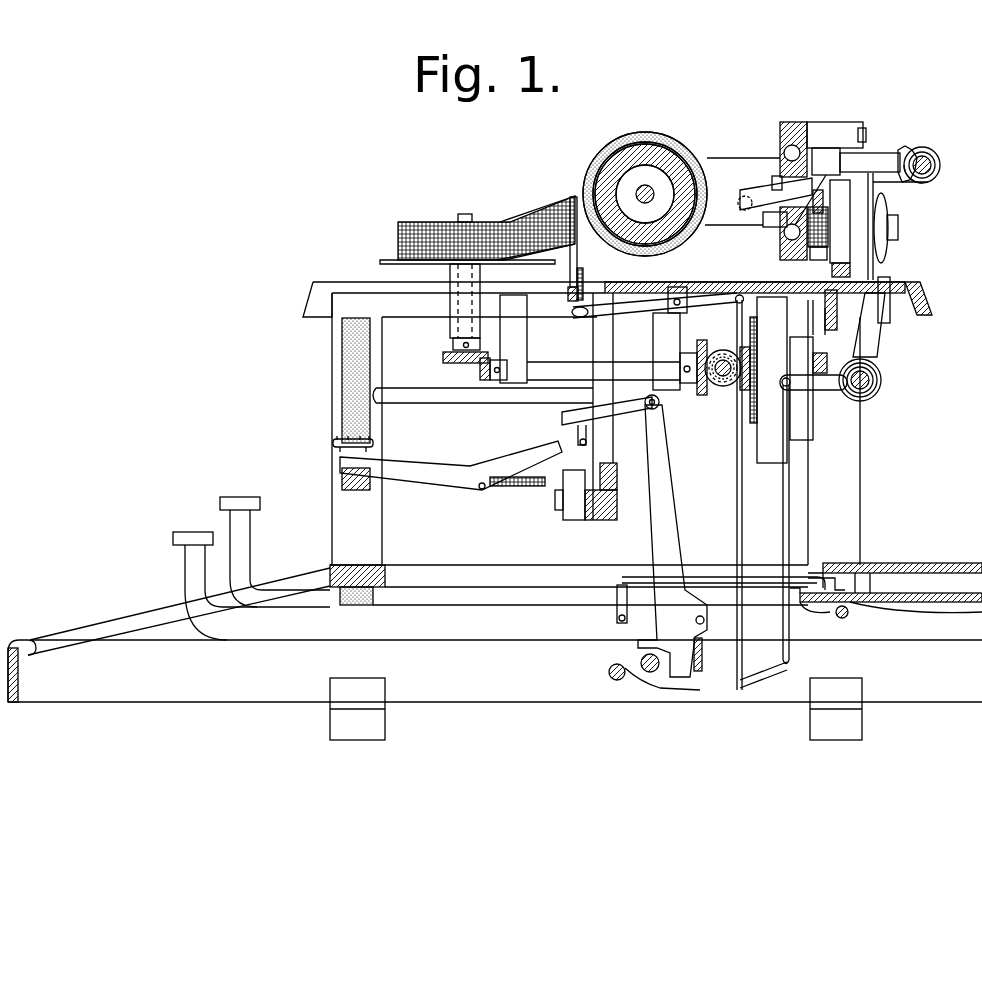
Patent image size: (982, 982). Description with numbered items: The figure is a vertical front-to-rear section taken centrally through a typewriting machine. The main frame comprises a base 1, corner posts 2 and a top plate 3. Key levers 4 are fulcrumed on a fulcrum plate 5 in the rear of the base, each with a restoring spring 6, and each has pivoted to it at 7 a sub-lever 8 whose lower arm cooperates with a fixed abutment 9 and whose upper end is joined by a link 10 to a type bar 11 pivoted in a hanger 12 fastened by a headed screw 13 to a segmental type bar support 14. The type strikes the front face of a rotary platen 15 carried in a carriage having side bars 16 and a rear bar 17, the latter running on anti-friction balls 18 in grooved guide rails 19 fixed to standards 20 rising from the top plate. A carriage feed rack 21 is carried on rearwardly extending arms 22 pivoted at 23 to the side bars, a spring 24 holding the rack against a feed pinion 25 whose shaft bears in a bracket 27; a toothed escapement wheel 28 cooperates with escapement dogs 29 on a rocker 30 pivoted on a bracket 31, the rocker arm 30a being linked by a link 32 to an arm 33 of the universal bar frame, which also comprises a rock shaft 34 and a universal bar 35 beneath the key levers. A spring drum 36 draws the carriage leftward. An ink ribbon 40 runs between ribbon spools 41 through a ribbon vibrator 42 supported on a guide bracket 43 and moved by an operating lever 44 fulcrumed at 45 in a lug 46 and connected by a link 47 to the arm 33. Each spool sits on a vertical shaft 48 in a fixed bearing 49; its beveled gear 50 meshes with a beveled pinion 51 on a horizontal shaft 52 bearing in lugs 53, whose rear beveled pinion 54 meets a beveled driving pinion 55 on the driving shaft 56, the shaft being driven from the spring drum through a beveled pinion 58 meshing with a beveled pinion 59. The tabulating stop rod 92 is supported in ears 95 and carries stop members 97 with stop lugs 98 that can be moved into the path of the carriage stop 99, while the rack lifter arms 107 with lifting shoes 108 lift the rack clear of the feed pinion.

The base 1 is at (937, 563).
The corner posts 2 is at (868, 505).
The top plate 3 is at (718, 283).
The key levers 4 is at (505, 640).
The fulcrum plate 5 is at (893, 592).
The restoring spring 6 is at (707, 577).
The pivot 7 is at (705, 620).
The sub-lever 8 is at (665, 466).
The fixed abutment 9 is at (653, 657).
The link 10 is at (624, 404).
The type bar 11 is at (508, 458).
The hanger 12 is at (581, 520).
The headed screw 13 is at (554, 500).
The segmental type bar support 14 is at (617, 497).
The rotary platen 15 is at (656, 133).
The side bars 16 is at (714, 158).
The rear bar 17 is at (819, 186).
The anti-friction balls 18 is at (800, 150).
The grooved guide rails 19 is at (793, 122).
The standards 20 is at (850, 122).
The carriage feed rack 21 is at (825, 198).
The rearwardly extending arms 22 is at (754, 194).
The pivot 23 is at (738, 206).
The spring 24 is at (783, 182).
The feed pinion 25 is at (829, 232).
The bracket 27 is at (880, 222).
The toothed escapement wheel 28 is at (897, 237).
The escapement dogs 29 is at (893, 282).
The dog carrier or rocker 30 is at (870, 376).
The horizontally disposed arm 30a is at (800, 390).
The bracket 31 is at (837, 312).
The link 32 is at (784, 515).
The arm 33 is at (763, 672).
The rock shaft 34 is at (609, 674).
The universal bar 35 is at (703, 652).
The spring drum 36 is at (792, 380).
The ink ribbon 40 is at (543, 207).
The ribbon spools 41 is at (487, 222).
The ribbon carrier or vibrator 42 is at (590, 274).
The guide bracket 43 is at (573, 310).
The operating lever 44 is at (655, 289).
The fulcrum 45 is at (682, 287).
The lug 46 is at (670, 310).
The link 47 is at (736, 458).
The vertical shaft 48 is at (463, 206).
The fixed bearing 49 is at (450, 325).
The beveled gear 50 is at (460, 356).
The beveled pinion 51 is at (482, 384).
The horizontal shaft 52 is at (553, 362).
The lugs 53 is at (598, 342).
The beveled pinion 54 is at (700, 395).
The beveled driving pinion 55 is at (712, 350).
The driving shaft 56 is at (724, 388).
The beveled pinion 58 is at (756, 347).
The beveled pinion 59 is at (724, 352).
The stop rod 92 is at (938, 161).
The ears 95 is at (927, 180).
The stop members 97 is at (920, 149).
The stop lugs 98 is at (903, 150).
The carriage stop 99 is at (875, 153).
The arms 107 is at (817, 253).
The lifting shoes 108 is at (775, 219).